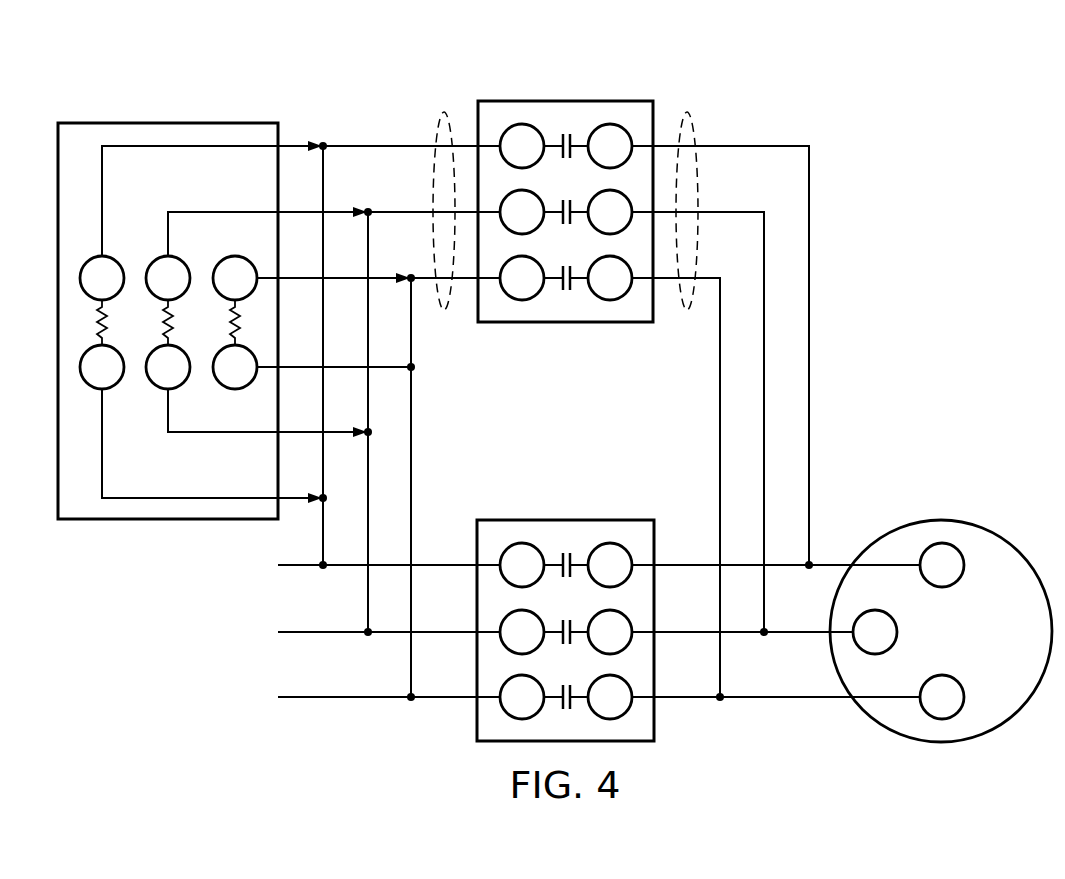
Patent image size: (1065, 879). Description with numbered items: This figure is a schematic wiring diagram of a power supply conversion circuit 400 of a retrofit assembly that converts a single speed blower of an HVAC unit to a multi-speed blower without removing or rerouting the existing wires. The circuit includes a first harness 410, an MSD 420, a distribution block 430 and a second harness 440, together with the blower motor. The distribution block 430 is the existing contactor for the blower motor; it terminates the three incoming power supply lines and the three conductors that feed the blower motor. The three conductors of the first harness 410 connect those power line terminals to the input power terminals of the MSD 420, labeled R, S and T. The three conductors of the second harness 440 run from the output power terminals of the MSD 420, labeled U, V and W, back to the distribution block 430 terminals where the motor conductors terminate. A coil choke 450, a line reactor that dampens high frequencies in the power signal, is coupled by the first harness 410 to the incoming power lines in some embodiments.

The power supply conversion circuit 400 is at (866, 100).
The first harness 410 is at (444, 111).
The MSD 420 is at (568, 99).
The distribution block 430 is at (567, 518).
The second harness 440 is at (687, 111).
The coil choke 450 is at (168, 121).